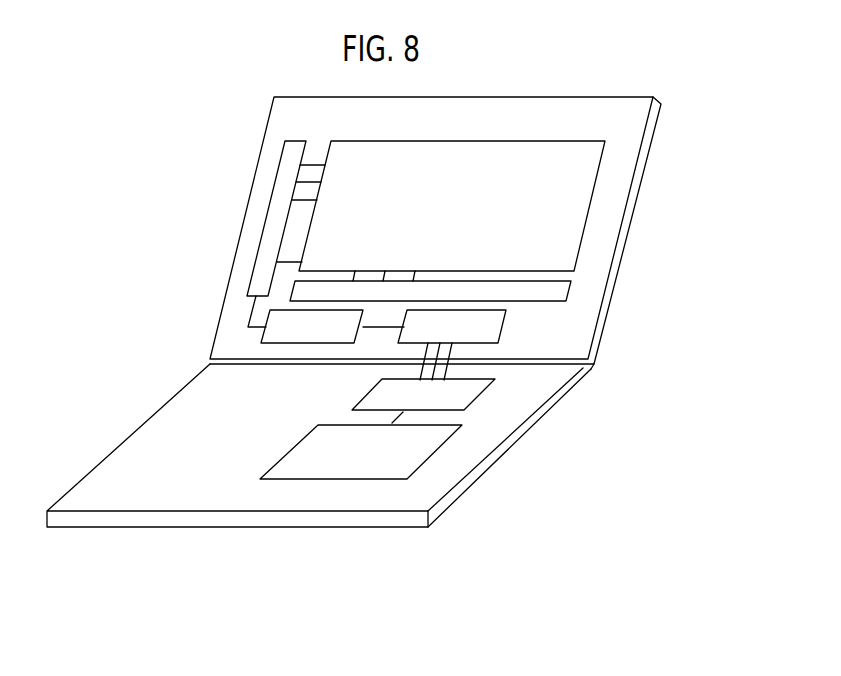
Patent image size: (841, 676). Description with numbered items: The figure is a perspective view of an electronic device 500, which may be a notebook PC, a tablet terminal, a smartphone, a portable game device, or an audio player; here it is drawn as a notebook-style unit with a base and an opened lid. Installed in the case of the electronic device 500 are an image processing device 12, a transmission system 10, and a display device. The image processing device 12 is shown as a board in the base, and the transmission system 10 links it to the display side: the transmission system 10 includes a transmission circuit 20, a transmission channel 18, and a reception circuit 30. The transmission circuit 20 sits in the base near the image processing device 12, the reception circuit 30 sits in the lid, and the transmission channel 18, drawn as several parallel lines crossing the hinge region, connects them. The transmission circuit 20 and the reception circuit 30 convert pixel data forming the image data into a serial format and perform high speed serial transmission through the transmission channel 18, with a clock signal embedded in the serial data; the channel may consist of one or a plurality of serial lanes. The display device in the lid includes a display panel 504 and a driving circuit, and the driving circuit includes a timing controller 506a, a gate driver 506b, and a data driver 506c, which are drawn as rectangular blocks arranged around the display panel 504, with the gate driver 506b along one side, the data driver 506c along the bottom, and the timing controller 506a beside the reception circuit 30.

The electronic device 500 is at (406, 634).
The display panel 504 is at (560, 212).
The timing controller 506a is at (287, 330).
The gate driver 506b is at (275, 222).
The data driver 506c is at (555, 291).
The reception circuit 30 is at (487, 325).
The transmission channel 18 is at (462, 351).
The transmission circuit 20 is at (448, 395).
The transmission system 10 is at (678, 317).
The image processing device 12 is at (357, 457).